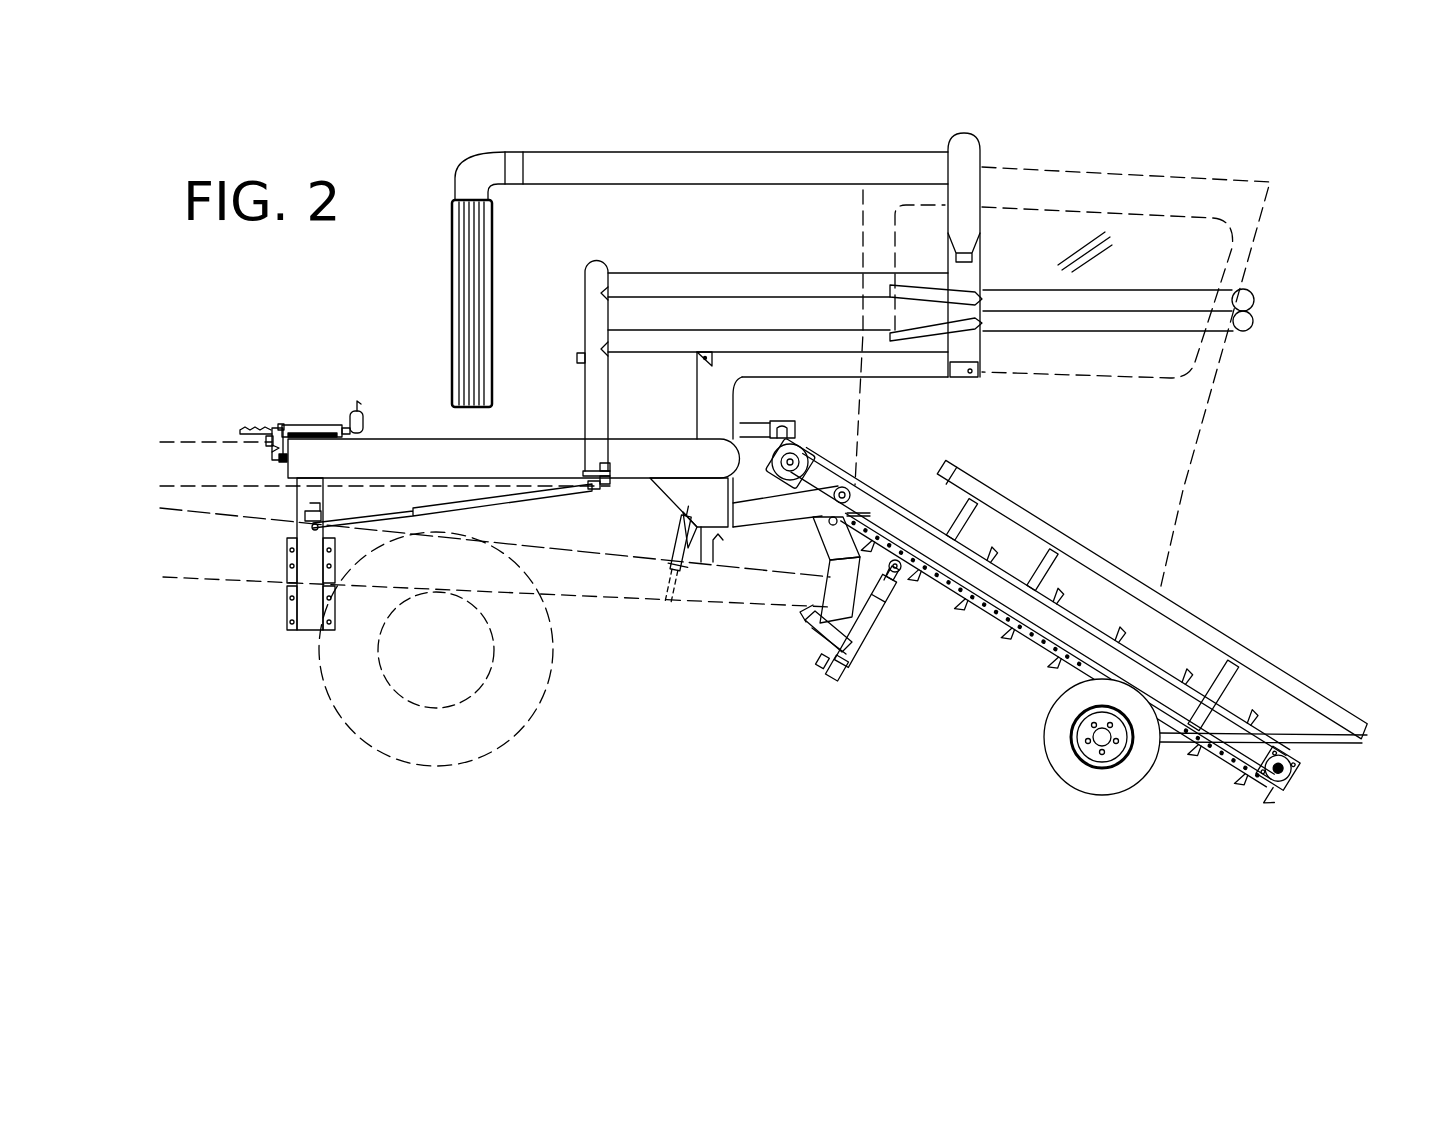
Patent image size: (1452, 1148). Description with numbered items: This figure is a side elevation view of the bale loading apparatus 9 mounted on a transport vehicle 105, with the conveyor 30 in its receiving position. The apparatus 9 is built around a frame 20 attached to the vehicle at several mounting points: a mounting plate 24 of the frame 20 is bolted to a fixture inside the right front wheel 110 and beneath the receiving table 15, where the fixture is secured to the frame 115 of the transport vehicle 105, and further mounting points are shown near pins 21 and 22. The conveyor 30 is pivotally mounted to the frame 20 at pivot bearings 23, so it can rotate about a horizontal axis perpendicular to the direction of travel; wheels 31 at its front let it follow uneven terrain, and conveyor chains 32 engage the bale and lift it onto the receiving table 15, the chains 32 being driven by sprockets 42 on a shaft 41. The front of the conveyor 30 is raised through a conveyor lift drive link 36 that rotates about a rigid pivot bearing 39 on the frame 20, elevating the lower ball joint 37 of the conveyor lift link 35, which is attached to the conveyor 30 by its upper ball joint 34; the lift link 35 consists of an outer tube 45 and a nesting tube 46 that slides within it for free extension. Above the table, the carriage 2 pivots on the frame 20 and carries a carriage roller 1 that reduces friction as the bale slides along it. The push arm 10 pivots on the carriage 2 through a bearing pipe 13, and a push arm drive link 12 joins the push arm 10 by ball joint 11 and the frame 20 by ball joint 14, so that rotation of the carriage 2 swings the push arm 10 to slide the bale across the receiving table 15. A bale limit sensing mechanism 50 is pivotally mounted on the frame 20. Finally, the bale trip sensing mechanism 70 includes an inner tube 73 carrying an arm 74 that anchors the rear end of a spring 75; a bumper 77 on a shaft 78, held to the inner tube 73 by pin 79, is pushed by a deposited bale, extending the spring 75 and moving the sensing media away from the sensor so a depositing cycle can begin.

The carriage roller 1 is at (462, 284).
The carriage 2 is at (735, 150).
The bale loading apparatus 9 is at (926, 780).
The push arm 10 is at (1260, 322).
The ball joint 11 is at (605, 495).
The push arm drive link 12 is at (500, 495).
The bearing pipe 13 is at (1000, 360).
The ball joint 14 is at (325, 535).
The receiving table 15 is at (164, 480).
The frame 20 is at (448, 437).
The pin 21 is at (660, 565).
The pin 22 is at (830, 598).
The pivot bearings 23 is at (855, 487).
The mounting plate 24 is at (290, 607).
The conveyor 30 is at (1215, 633).
The wheels 31 is at (1130, 775).
The conveyor chains 32 is at (983, 610).
The upper ball joint 34 is at (891, 582).
The conveyor lift link 35 is at (872, 628).
The conveyor lift drive link 36 is at (812, 652).
The lower ball joint 37 is at (840, 678).
The pivot bearing 39 is at (810, 622).
The shaft 41 is at (778, 467).
The sprockets 42 is at (800, 445).
The outer tube 45 is at (878, 603).
The nesting tube 46 is at (850, 660).
The bale limit sensing mechanism 50 is at (680, 365).
The bale trip sensing mechanism 70 is at (310, 425).
The inner tube 73 is at (270, 432).
The arm 74 is at (272, 448).
The spring 75 is at (282, 462).
The bumper 77 is at (358, 411).
The shaft 78 is at (244, 430).
The pin 79 is at (280, 424).
The transport vehicle 105 is at (1231, 455).
The right front wheel 110 is at (372, 713).
The frame of transport vehicle 115 is at (248, 552).